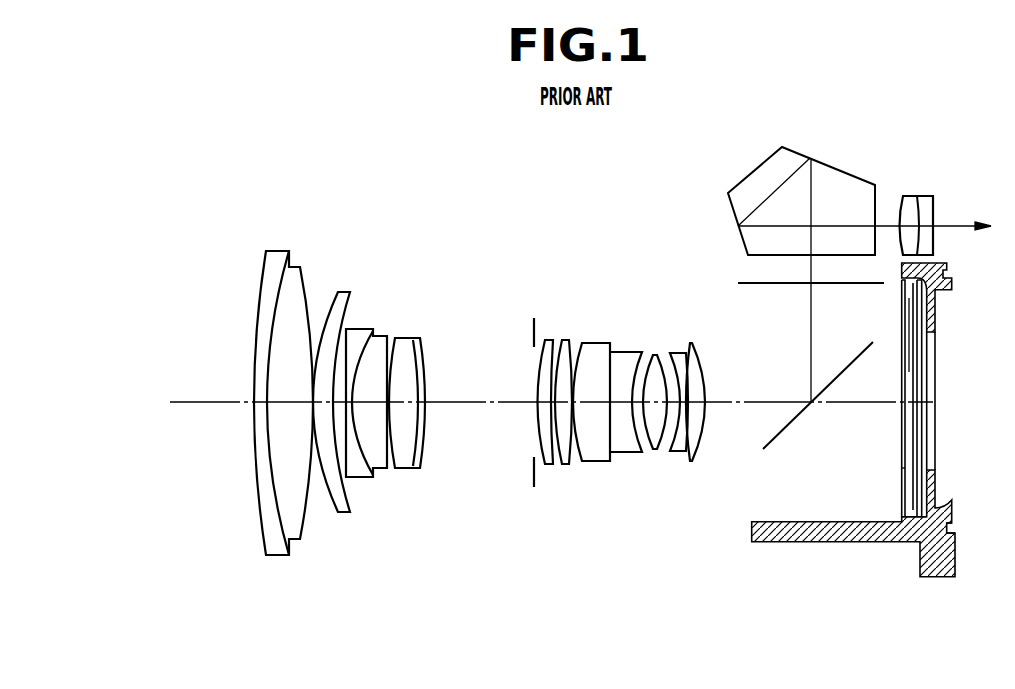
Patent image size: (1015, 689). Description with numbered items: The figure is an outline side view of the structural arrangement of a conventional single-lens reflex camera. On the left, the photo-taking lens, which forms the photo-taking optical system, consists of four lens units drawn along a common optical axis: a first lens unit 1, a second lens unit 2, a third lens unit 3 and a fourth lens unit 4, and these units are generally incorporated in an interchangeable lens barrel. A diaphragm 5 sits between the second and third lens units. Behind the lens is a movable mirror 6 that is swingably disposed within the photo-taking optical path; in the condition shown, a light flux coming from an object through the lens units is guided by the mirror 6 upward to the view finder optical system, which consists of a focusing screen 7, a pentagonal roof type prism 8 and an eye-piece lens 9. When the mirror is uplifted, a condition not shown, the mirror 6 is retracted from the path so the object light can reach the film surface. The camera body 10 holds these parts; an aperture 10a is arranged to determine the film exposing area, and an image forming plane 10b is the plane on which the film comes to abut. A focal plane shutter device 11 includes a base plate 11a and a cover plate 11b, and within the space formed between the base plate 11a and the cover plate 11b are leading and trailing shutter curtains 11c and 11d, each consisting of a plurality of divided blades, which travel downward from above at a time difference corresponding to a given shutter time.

The first lens unit 1 is at (350, 577).
The second lens unit 2 is at (427, 577).
The third lens unit 3 is at (543, 577).
The fourth lens unit 4 is at (716, 577).
The diaphragm 5 is at (534, 470).
The movable mirror 6 is at (797, 417).
The focusing screen 7 is at (765, 285).
The pentagonal roof type prism 8 is at (846, 180).
The eye-piece lens 9 is at (893, 191).
The camera body 10 is at (875, 448).
The aperture 10a is at (930, 332).
The image forming plane 10b is at (935, 387).
The focal plane shutter device 11 is at (900, 487).
The base plate 11a is at (898, 505).
The cover plate 11b is at (958, 538).
The leading shutter curtain 11c is at (913, 438).
The trailing shutter curtain 11d is at (908, 352).